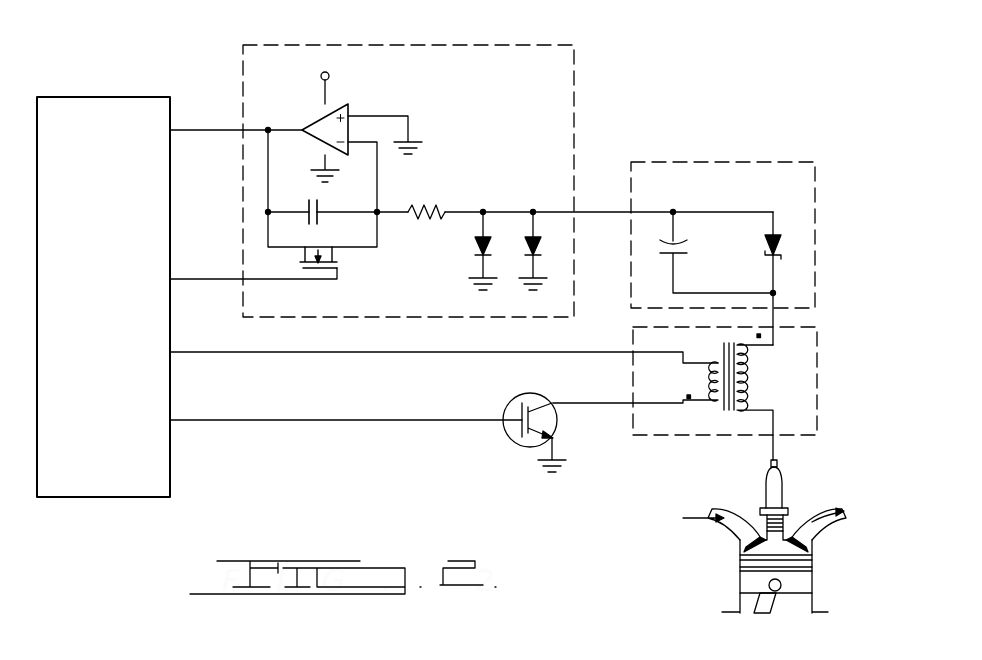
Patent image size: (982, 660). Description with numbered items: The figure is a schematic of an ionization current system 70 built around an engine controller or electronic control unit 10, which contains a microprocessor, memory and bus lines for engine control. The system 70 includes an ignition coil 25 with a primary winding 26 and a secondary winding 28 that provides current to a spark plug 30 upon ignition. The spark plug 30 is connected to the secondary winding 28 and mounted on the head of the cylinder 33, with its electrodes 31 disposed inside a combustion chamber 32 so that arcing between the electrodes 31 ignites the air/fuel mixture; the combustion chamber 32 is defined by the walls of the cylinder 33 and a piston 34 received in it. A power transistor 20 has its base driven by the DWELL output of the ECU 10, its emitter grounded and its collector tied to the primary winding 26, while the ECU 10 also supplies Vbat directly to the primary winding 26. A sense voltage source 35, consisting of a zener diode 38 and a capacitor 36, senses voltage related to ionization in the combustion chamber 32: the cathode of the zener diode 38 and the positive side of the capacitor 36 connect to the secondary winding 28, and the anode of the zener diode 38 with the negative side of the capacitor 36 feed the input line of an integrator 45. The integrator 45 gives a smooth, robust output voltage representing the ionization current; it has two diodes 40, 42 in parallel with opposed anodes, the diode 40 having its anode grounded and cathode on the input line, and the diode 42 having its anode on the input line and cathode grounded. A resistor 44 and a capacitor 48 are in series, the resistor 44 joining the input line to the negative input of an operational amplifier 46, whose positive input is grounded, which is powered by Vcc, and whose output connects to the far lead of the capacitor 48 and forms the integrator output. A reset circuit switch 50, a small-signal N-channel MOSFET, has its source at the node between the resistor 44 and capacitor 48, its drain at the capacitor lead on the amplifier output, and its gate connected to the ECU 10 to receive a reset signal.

The electronic control unit 10 is at (101, 321).
The power transistor 20 is at (510, 437).
The ignition coil 25 is at (820, 336).
The primary winding 26 is at (693, 368).
The secondary winding 28 is at (748, 372).
The spark plug 30 is at (790, 478).
The electrodes 31 is at (745, 553).
The combustion chamber 32 is at (800, 548).
The cylinder 33 is at (740, 585).
The piston 34 is at (812, 588).
The sense voltage source 35 is at (787, 160).
The capacitor 36 is at (686, 244).
The zener diode 38 is at (784, 252).
The diode 40 is at (537, 250).
The diode 42 is at (477, 244).
The resistor 44 is at (441, 207).
The integrator 45 is at (577, 98).
The operational amplifier 46 is at (350, 108).
The capacitor 48 is at (312, 200).
The reset circuit switch 50 is at (340, 268).
The ionization current system 70 is at (720, 80).